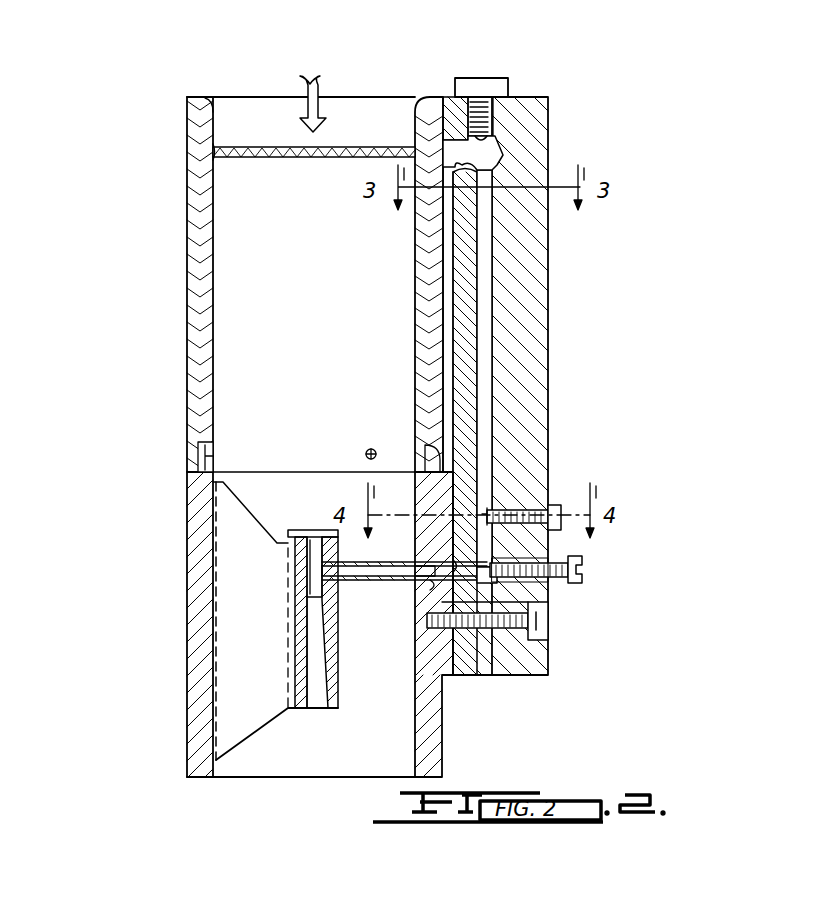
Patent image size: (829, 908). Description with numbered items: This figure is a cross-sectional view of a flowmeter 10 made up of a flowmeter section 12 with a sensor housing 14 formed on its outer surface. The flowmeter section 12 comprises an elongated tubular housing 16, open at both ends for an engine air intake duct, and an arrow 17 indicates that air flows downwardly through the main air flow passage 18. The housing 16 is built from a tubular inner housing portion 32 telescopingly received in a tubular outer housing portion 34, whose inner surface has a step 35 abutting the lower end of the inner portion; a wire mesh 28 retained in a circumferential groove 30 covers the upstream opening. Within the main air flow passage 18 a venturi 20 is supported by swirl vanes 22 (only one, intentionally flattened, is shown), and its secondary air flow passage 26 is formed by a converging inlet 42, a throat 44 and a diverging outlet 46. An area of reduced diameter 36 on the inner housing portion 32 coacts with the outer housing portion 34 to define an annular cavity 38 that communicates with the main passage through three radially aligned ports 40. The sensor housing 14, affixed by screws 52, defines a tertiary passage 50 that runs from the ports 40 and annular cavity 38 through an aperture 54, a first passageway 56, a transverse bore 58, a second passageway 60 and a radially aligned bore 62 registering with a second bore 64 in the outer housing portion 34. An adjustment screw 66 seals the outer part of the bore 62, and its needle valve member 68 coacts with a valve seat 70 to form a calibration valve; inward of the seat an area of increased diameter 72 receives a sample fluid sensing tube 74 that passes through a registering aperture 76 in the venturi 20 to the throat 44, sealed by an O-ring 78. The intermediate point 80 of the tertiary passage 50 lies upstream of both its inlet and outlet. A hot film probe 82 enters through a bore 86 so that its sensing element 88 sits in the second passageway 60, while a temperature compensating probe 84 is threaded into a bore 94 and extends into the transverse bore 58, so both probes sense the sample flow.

The flowmeter 10 is at (274, 407).
The flowmeter section 12 is at (274, 437).
The sensor housing 14 is at (552, 327).
The tubular housing 16 is at (190, 292).
The arrow 17 is at (322, 80).
The main air flow passage 18 is at (400, 100).
The venturi 20 is at (314, 646).
The swirl vanes 22 is at (262, 646).
The secondary air flow passage 26 is at (305, 532).
The wire mesh 28 is at (275, 158).
The circumferential groove 30 is at (214, 150).
The inner housing portion 32 is at (218, 343).
The outer housing portion 34 is at (190, 346).
The step 35 is at (207, 483).
The area of reduced diameter 36 is at (428, 445).
The annular cavity 38 is at (198, 452).
The ports 40 is at (214, 458).
The converging inlet 42 is at (320, 540).
The throat 44 is at (300, 580).
The diverging outlet 46 is at (315, 700).
The tertiary passage 50 is at (443, 270).
The screws 52 is at (550, 622).
The aperture 54 is at (428, 475).
The first passageway 56 is at (445, 316).
The transverse bore 58 is at (455, 115).
The second passageway 60 is at (486, 266).
The radially aligned bore 62 is at (582, 568).
The second bore 64 is at (420, 582).
The adjustment screw 66 is at (567, 562).
The needle valve member 68 is at (532, 578).
The valve seat 70 is at (485, 583).
The area of increased diameter 72 is at (430, 608).
The sample fluid sensing tube 74 is at (388, 563).
The registering aperture 76 is at (350, 558).
The O-ring 78 is at (453, 560).
The intermediate point 80 is at (505, 158).
The hot film probe 82 is at (556, 504).
The temperature compensating probe 84 is at (500, 82).
The bore 86 is at (515, 505).
The sensing element 88 is at (490, 510).
The bore 94 is at (482, 120).